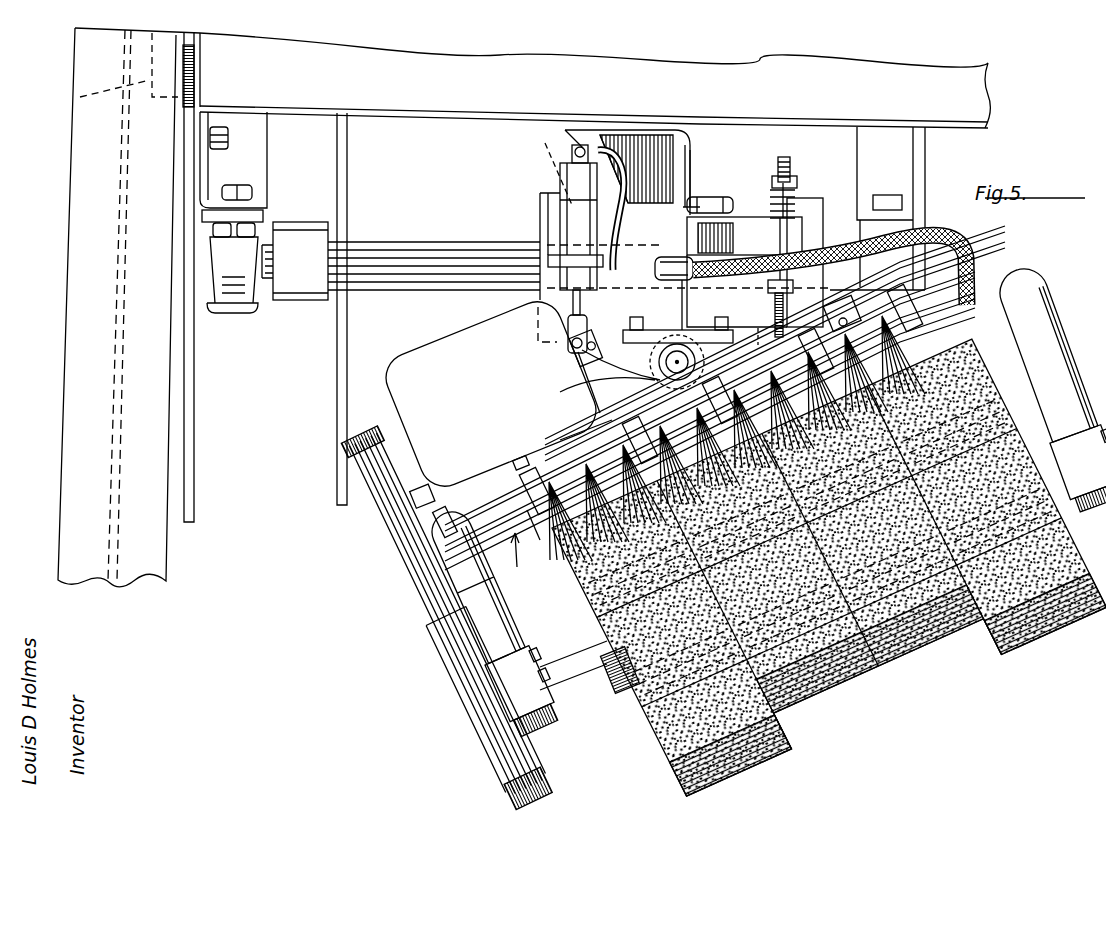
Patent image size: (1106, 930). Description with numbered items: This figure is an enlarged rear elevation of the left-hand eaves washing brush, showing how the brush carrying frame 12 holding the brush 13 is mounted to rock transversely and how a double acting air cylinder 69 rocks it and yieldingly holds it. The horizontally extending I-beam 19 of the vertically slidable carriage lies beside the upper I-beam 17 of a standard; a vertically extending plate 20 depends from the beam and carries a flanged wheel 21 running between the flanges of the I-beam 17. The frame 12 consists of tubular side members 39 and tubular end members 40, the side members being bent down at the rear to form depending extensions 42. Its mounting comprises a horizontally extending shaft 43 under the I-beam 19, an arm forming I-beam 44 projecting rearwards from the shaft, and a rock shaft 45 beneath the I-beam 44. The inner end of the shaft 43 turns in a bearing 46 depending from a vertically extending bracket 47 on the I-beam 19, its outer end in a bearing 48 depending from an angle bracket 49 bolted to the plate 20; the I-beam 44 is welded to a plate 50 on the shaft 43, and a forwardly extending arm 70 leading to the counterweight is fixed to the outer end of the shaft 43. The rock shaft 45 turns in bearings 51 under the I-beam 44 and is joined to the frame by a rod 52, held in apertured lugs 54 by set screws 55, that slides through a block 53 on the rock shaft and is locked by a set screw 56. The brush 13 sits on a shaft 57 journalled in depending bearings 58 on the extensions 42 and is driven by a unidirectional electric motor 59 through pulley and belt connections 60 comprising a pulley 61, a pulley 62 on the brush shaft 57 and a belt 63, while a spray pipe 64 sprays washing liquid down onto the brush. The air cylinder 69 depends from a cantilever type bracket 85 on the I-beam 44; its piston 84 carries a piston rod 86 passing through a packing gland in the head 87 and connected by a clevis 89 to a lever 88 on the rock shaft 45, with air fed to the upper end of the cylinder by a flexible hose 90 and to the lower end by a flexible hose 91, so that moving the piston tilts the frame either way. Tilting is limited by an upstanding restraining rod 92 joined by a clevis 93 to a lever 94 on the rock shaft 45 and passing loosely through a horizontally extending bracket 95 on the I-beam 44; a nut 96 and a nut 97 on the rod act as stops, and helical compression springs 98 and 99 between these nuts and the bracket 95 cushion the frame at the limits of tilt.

The brush carrying frame 12 is at (526, 560).
The brush 13 is at (827, 723).
The upper I-beam 17 is at (75, 188).
The I-beam 19 is at (462, 85).
The vertically extending plate 20 is at (197, 398).
The flanged wheel 21 is at (80, 97).
The tubular side member 39 is at (445, 540).
The tubular end member 40 is at (540, 540).
The depending extension 42 is at (487, 632).
The horizontally extending shaft 43 is at (427, 240).
The arm forming I-beam 44 is at (697, 197).
The rock shaft 45 is at (613, 397).
The bearing 46 is at (947, 245).
The vertically extending bracket 47 is at (925, 175).
The bearing 48 is at (230, 313).
The angle bracket 49 is at (257, 150).
The plate 50 is at (548, 195).
The bearing 51 is at (690, 327).
The rod 52 is at (580, 428).
The block 53 is at (577, 410).
The apertured lug 54 is at (867, 293).
The set screw 55 is at (960, 257).
The set screw 56 is at (720, 399).
The shaft 57 is at (585, 683).
The depending bearing 58 is at (543, 723).
The unidirectional electric motor 59 is at (418, 357).
The pulley and belt connection 60 is at (422, 614).
The pulley 61 is at (373, 427).
The pulley 62 is at (513, 800).
The belt 63 is at (483, 712).
The spray pipe 64 is at (1017, 310).
The double acting air cylinder 69 is at (560, 227).
The forwardly extending arm 70 is at (303, 238).
The piston 84 is at (548, 164).
The cantilever type bracket 85 is at (637, 132).
The piston rod 86 is at (580, 307).
The head 87 is at (600, 282).
The lever 88 is at (650, 362).
The clevis 89 is at (587, 325).
The flexible hose 90 is at (686, 150).
The flexible hose 91 is at (622, 230).
The restraining rod 92 is at (780, 233).
The clevis 93 is at (803, 320).
The lever 94 is at (737, 438).
The horizontally extending bracket 95 is at (742, 213).
The nut 96 is at (790, 175).
The nut 97 is at (787, 293).
The helical compression spring 98 is at (793, 193).
The helical compression spring 99 is at (793, 287).